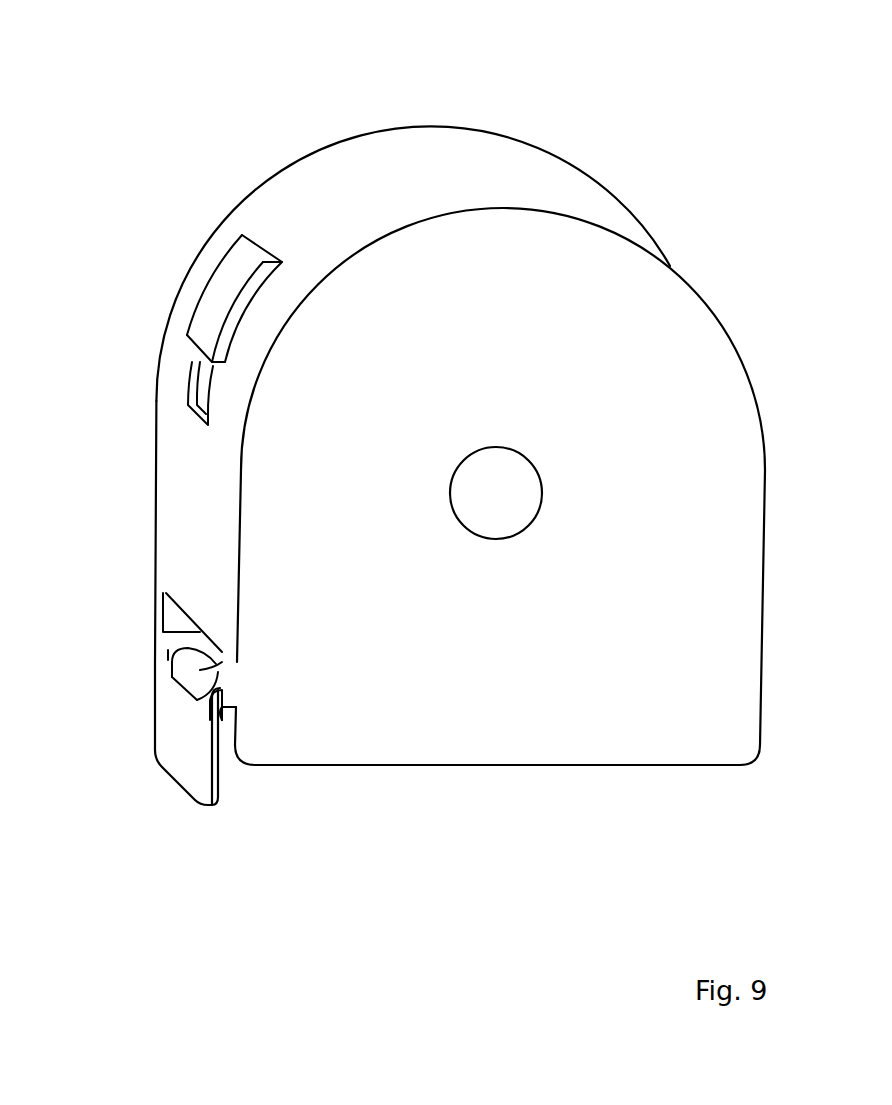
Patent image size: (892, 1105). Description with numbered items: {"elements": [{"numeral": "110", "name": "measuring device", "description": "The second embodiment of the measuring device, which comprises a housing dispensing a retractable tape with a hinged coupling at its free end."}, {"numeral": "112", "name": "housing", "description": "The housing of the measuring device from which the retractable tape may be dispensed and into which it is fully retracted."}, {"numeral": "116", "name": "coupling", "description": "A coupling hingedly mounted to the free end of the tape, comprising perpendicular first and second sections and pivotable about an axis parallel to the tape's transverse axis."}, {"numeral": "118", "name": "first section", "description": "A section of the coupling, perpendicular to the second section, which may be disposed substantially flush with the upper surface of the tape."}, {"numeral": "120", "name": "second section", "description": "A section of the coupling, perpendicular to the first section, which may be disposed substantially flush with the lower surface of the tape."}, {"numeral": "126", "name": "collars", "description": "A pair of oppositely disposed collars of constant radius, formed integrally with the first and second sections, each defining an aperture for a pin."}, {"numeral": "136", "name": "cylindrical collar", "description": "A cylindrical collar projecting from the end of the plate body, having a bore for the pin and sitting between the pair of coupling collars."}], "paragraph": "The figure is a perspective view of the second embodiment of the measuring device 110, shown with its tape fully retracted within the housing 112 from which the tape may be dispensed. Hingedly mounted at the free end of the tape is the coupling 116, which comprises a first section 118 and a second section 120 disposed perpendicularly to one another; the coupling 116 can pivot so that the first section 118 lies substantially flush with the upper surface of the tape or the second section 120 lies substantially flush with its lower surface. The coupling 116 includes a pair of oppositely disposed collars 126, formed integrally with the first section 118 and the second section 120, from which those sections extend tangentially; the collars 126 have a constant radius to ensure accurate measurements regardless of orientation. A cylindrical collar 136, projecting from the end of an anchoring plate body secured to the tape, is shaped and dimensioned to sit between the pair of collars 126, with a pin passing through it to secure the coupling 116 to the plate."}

The tape measure 110 is at (398, 423).
The housing 112 is at (667, 277).
The clip assembly 116 is at (180, 708).
The tab 118 is at (219, 652).
The clip 120 is at (172, 788).
The pin end boss 126 is at (152, 708).
The pivot pin 136 is at (200, 670).